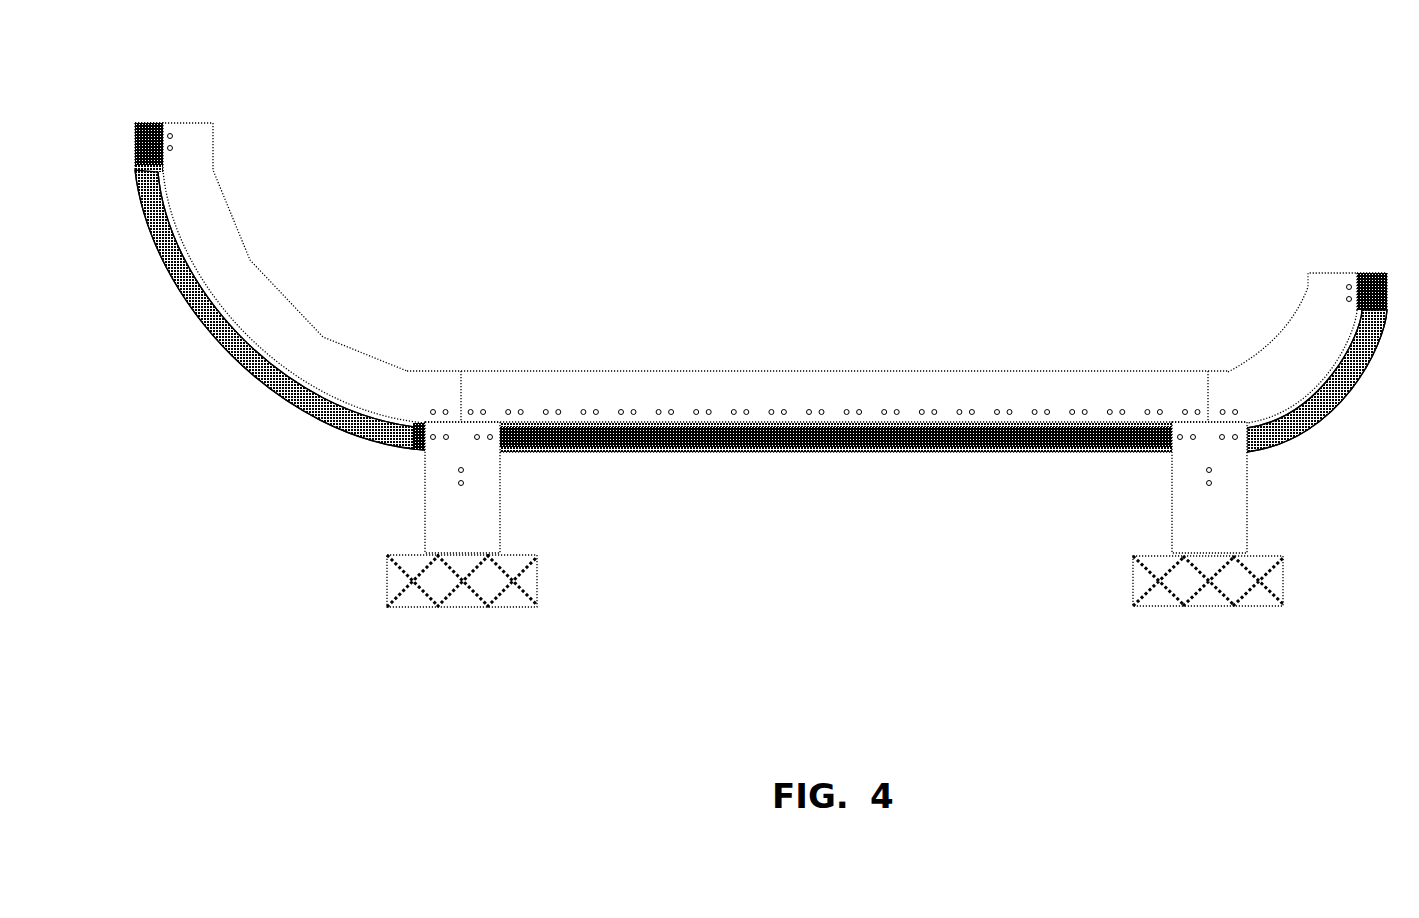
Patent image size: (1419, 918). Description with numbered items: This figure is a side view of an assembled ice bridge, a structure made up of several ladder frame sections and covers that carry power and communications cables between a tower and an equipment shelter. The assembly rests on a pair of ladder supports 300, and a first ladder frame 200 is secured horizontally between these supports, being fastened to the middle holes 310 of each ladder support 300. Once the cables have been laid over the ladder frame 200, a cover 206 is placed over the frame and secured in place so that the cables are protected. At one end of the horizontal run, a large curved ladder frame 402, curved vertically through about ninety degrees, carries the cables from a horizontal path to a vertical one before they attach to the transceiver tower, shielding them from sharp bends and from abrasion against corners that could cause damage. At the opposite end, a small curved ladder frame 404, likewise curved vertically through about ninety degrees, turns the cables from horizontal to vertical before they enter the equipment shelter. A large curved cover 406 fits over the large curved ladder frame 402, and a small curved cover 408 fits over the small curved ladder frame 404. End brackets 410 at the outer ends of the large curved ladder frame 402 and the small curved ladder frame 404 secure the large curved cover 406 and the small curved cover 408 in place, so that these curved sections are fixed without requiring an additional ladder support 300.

The first ladder frame 200 is at (686, 457).
The cover 206 is at (806, 370).
The ladder support 300 is at (468, 615).
The middle holes 310 is at (492, 445).
The large curved ladder frame 402 is at (255, 383).
The small curved ladder frame 404 is at (1348, 385).
The large curved cover 406 is at (290, 303).
The small curved cover 408 is at (1270, 343).
The end bracket 410 is at (161, 121).